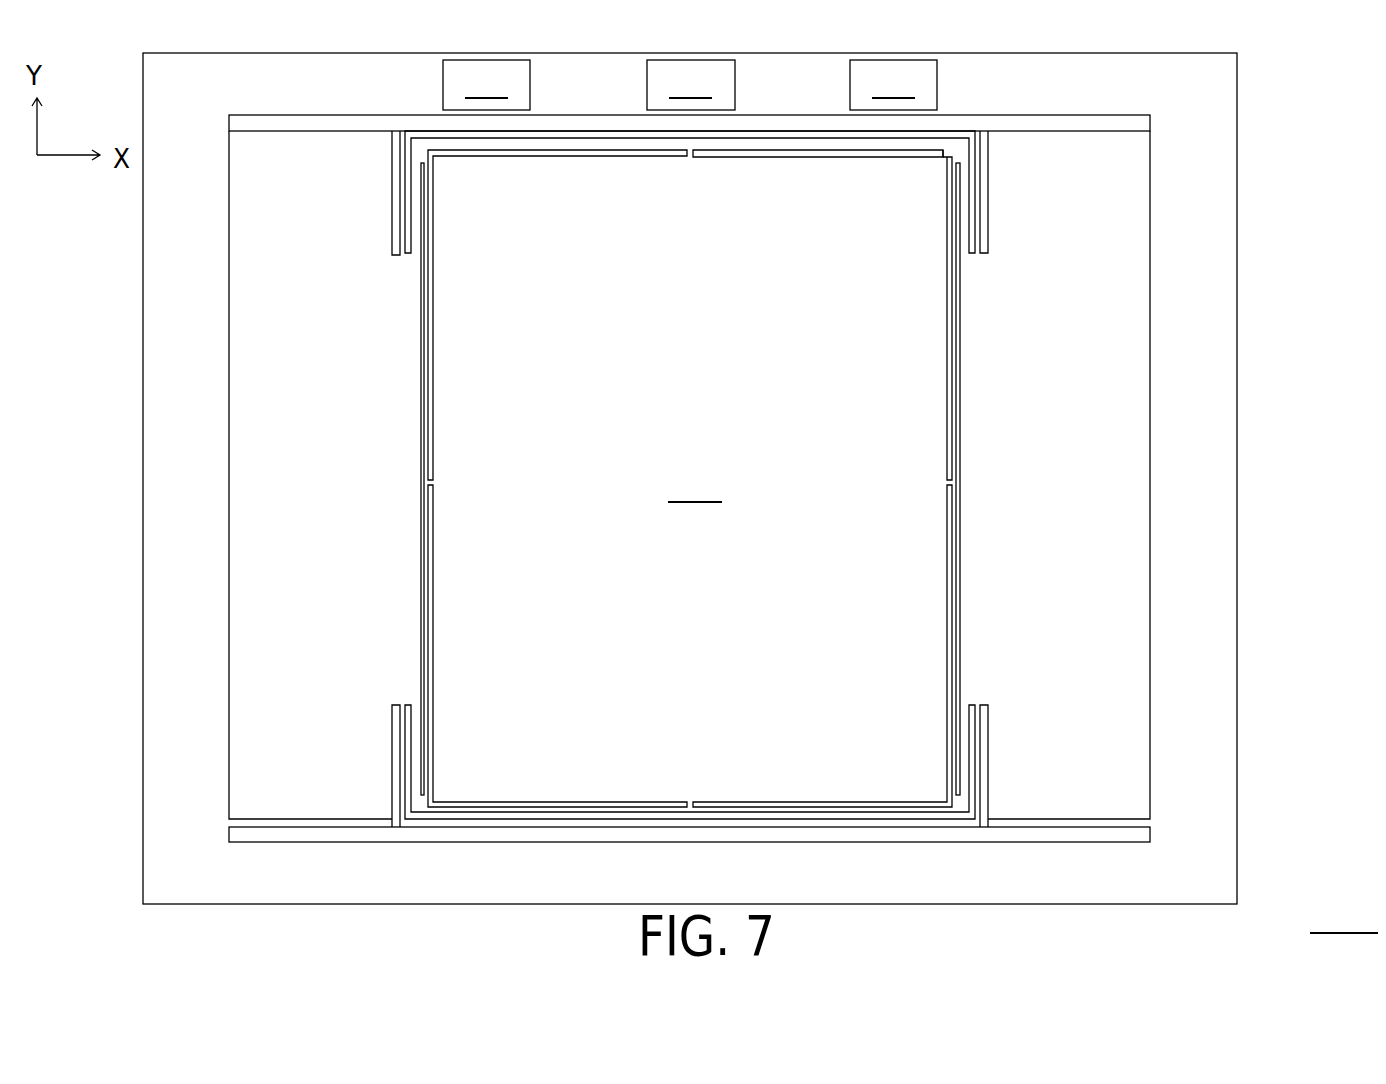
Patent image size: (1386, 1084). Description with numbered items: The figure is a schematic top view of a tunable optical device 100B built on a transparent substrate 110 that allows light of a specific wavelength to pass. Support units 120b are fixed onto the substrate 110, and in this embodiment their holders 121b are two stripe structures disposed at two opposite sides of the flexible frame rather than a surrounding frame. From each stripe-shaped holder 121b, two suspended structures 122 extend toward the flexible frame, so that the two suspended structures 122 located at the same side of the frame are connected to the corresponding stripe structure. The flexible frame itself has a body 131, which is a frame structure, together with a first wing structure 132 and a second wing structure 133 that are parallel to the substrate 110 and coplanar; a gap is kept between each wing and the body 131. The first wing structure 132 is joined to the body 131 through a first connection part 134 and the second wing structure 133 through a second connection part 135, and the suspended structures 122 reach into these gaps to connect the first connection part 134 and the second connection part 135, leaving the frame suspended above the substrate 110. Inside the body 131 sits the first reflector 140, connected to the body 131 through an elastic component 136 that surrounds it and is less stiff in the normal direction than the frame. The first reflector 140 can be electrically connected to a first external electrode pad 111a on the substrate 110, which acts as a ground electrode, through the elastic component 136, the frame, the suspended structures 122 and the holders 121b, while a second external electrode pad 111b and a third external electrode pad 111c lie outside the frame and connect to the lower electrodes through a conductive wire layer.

The tunable optical device 100B is at (1344, 915).
The substrate 110 is at (178, 720).
The first external electrode pad 111a is at (486, 85).
The second external electrode pad 111b is at (691, 85).
The third external electrode pad 111c is at (893, 85).
The support unit 120b is at (698, 523).
The holder 121b is at (1142, 124).
The suspended structure 122 is at (400, 225).
The body 131 is at (823, 146).
The first wing structure 132 is at (250, 400).
The second wing structure 133 is at (1130, 392).
The first connection part 134 is at (400, 653).
The second connection part 135 is at (982, 645).
The elastic component 136 is at (953, 170).
The first reflector 140 is at (695, 484).